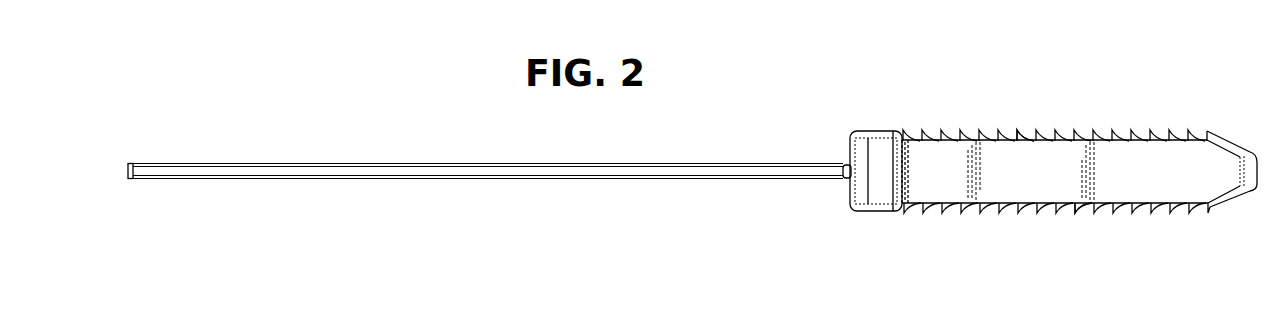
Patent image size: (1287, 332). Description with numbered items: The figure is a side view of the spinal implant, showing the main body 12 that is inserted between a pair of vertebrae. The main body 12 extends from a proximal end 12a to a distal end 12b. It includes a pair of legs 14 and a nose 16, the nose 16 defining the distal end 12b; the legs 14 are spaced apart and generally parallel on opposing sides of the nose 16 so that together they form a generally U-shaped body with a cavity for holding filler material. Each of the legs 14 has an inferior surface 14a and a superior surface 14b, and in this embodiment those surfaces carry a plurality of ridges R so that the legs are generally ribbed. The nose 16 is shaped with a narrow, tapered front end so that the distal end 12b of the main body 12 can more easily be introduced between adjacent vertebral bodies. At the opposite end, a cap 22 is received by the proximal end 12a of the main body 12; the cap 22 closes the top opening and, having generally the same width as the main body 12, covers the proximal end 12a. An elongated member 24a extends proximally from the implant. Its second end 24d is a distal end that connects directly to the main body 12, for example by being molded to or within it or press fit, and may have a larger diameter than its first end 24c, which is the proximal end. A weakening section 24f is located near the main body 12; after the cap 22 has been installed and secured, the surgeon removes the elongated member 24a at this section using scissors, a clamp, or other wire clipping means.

The main body 12 is at (1028, 187).
The proximal end 12a is at (918, 178).
The distal end 12b is at (1258, 172).
The legs 14 is at (1056, 176).
The inferior surface 14a is at (1157, 210).
The superior surface 14b is at (1157, 133).
The nose 16 is at (1232, 140).
The cap 22 is at (882, 146).
The elongated member 24a is at (525, 170).
The first end 24c is at (165, 170).
The second end 24d is at (832, 140).
The weakening section 24f is at (842, 185).
The ridges R is at (1025, 135).